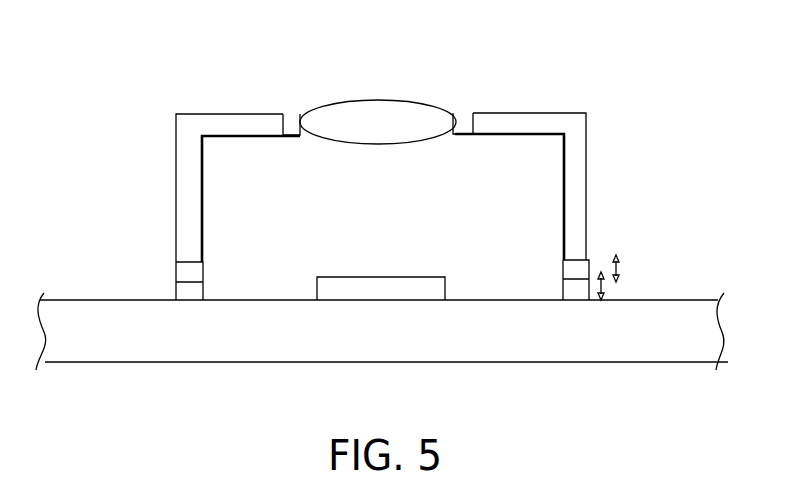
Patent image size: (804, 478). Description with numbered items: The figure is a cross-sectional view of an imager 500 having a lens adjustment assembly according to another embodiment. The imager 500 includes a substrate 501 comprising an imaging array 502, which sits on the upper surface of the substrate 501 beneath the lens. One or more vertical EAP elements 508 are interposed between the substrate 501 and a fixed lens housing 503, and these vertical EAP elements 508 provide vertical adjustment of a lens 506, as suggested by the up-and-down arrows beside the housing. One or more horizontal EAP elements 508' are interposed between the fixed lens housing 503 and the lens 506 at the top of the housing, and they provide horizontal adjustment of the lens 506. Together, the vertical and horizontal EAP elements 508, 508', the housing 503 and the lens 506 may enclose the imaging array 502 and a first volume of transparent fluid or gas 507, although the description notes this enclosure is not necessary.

The imager 500 is at (92, 102).
The substrate 501 is at (683, 344).
The imaging array 502 is at (350, 292).
The fixed lens housing 503 is at (186, 190).
The lens 506 is at (398, 131).
The first volume of transparent fluid or gas 507 is at (252, 189).
The vertical EAP elements 508 is at (364, 333).
The horizontal EAP elements 508' is at (379, 84).